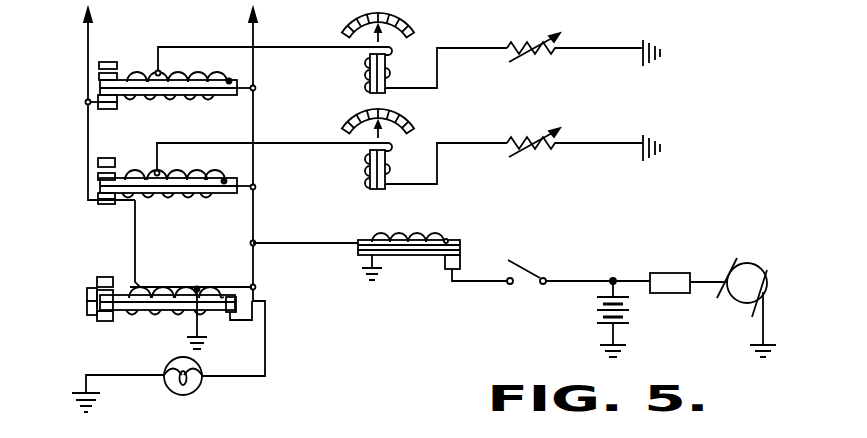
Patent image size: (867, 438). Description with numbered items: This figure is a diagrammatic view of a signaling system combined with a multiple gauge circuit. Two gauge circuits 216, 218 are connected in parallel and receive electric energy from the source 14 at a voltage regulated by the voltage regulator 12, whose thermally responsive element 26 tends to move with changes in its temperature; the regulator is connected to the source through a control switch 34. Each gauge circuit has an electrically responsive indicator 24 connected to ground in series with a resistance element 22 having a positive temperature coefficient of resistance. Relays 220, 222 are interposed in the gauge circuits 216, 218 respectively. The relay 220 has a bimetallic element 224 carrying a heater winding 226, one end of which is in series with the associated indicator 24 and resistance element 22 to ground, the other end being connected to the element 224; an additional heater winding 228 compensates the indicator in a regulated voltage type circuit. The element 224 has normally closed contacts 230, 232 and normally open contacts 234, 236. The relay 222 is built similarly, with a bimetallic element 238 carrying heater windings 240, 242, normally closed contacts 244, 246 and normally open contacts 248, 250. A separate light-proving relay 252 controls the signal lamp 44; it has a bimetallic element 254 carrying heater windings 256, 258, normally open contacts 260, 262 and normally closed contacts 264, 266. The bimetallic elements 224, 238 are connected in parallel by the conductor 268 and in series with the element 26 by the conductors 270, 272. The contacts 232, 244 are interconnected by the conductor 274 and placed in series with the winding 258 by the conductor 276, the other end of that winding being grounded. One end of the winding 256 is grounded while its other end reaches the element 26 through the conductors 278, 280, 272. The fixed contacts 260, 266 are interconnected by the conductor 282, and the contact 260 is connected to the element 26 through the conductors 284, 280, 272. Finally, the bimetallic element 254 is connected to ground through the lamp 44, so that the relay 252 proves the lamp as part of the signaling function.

The voltage regulator 12 is at (391, 224).
The source 14 is at (671, 272).
The resistance element 22 is at (522, 48).
The electrically responsive indicator 24 is at (415, 25).
The thermally responsive element 26 is at (437, 256).
The control switch 34 is at (545, 277).
The signal lamp 44 is at (193, 392).
The gauge circuit 216 is at (449, 145).
The gauge circuit 218 is at (449, 49).
The relay 220 is at (176, 196).
The relay 222 is at (176, 100).
The bimetallic element 224 is at (226, 193).
The heater winding 226 is at (190, 176).
The additional heater winding 228 is at (125, 172).
The normally closed contact 230 is at (98, 194).
The normally closed contact 232 is at (100, 203).
The normally open contact 234 is at (98, 178).
The normally open contact 236 is at (98, 163).
The bimetallic element 238 is at (226, 96).
The heater winding 240 is at (200, 80).
The heater winding 242 is at (125, 73).
The normally closed contact 244 is at (98, 108).
The normally closed contact 246 is at (98, 98).
The normally open contact 248 is at (99, 77).
The normally open contact 250 is at (99, 66).
The light-proving relay 252 is at (158, 315).
The bimetallic element 254 is at (218, 313).
The heater winding 256 is at (216, 285).
The heater winding 258 is at (160, 290).
The normally open contact 260 is at (97, 280).
The normally open contact 262 is at (87, 292).
The normally closed contact 264 is at (97, 316).
The normally closed contact 266 is at (100, 322).
The conductor 268 is at (256, 119).
The conductor 270 is at (256, 213).
The conductor 272 is at (294, 243).
The conductor 274 is at (88, 136).
The conductor 276 is at (136, 246).
The conductor 278 is at (256, 296).
The conductor 280 is at (255, 268).
The conductor 282 is at (87, 306).
The conductor 284 is at (141, 286).